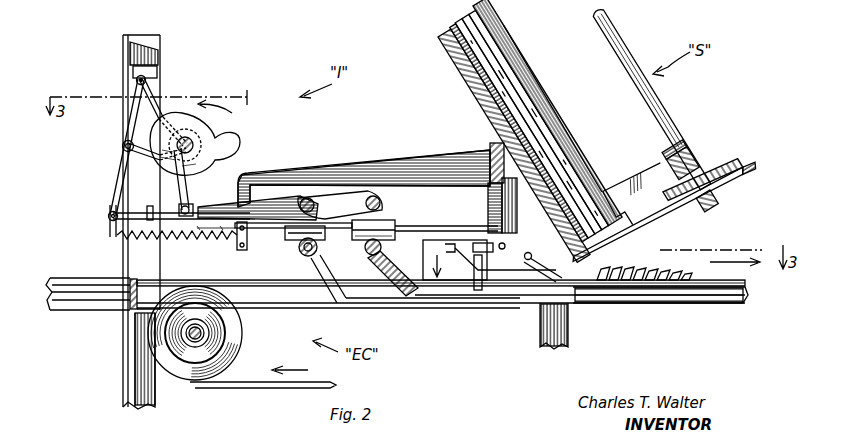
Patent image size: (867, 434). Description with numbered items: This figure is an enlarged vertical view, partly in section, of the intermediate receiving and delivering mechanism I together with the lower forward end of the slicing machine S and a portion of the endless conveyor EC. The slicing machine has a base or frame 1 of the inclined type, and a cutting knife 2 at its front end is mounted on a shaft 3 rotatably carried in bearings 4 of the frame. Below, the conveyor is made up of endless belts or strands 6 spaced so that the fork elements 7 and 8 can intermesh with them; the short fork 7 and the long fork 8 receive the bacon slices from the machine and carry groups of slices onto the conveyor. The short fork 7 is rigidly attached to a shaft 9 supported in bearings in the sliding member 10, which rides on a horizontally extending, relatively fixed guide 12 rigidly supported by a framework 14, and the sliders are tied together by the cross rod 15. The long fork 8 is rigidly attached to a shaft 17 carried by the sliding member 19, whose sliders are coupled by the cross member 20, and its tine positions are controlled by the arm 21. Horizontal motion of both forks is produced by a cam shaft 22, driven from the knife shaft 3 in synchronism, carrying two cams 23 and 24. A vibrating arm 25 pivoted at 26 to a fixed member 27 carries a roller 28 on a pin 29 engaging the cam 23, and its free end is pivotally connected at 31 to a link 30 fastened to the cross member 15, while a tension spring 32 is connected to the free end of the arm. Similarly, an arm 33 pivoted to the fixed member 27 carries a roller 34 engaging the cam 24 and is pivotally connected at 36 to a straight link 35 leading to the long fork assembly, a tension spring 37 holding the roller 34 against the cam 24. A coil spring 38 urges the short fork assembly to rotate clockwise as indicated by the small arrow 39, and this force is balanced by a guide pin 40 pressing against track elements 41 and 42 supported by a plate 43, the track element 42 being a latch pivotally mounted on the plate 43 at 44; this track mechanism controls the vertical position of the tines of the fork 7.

The base or frame of the slicing machine 1 is at (467, 82).
The cutting knife 2 is at (643, 222).
The shaft 3 is at (650, 106).
The bearings 4 is at (700, 155).
The endless belts or strands 6 is at (303, 292).
The fork element (short fork) 7 is at (430, 305).
The fork element (long fork) 8 is at (362, 303).
The shaft 9 is at (372, 257).
The sliding member 10 is at (395, 222).
The guide 12 is at (440, 228).
The framework 14 is at (348, 173).
The cross rod 15 is at (377, 196).
The shaft 17 is at (300, 252).
The sliding member 19 is at (318, 213).
The cross member or shaft 20 is at (307, 198).
The arm 21 is at (445, 247).
The cam shaft 22 is at (197, 145).
The cam 23 is at (172, 115).
The cam 24 is at (230, 112).
The vibrating arm 25 is at (118, 182).
The pivot 26 is at (137, 81).
The fixed member 27 is at (160, 62).
The roller 28 is at (124, 138).
The pin 29 is at (122, 148).
The link 30 is at (150, 214).
The pivotal connection 31 is at (108, 216).
The tension spring 32 is at (140, 238).
The arm 33 is at (188, 190).
The roller 34 is at (152, 156).
The link 35 is at (268, 198).
The pivotal connection 36 is at (192, 207).
The tension spring 37 is at (215, 236).
The coil spring 38 is at (296, 243).
The arrow 39 is at (455, 260).
The guide pin 40 is at (484, 250).
The track element 41 is at (479, 292).
The track element 42 is at (505, 244).
The plate 43 is at (545, 254).
The pivot 44 is at (528, 260).